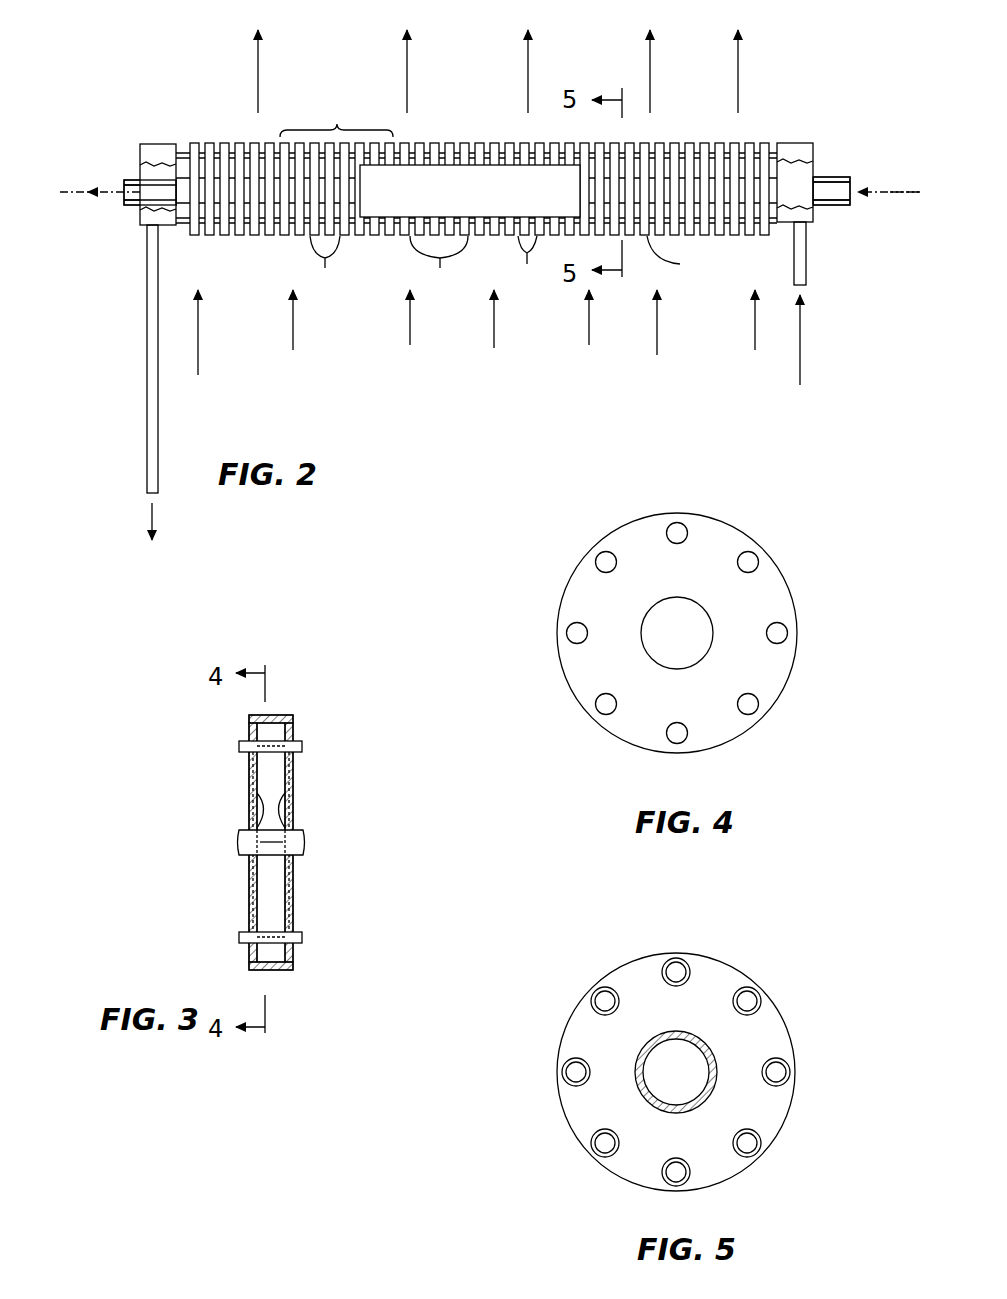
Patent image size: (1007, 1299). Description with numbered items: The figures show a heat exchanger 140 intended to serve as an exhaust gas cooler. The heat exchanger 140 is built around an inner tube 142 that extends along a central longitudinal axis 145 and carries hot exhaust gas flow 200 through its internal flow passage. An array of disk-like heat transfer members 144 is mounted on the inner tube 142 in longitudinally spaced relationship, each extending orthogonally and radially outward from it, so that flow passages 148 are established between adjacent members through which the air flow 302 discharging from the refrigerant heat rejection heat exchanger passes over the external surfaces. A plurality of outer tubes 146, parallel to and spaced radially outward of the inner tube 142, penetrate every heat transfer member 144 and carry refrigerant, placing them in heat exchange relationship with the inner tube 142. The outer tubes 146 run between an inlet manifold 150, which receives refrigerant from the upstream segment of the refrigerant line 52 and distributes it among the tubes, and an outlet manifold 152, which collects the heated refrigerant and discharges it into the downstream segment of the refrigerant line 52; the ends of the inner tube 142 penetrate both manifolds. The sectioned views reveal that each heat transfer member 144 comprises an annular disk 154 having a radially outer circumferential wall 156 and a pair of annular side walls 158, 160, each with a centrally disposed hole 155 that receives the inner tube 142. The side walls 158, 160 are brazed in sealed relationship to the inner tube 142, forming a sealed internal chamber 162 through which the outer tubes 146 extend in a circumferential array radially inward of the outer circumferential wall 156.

In FIG. 2, the refrigerant line 52 is at (147, 372).
In FIG. 2, the heat exchanger 140 is at (712, 138).
In FIG. 2, the inner tube 142 is at (133, 206).
In FIG. 3, the inner tube 142 is at (305, 836).
In FIG. 4, the inner tube 142 is at (683, 665).
In FIG. 5, the inner tube 142 is at (660, 1036).
In FIG. 2, the heat transfer members 144 is at (336, 116).
In FIG. 4, the heat transfer members 144 is at (720, 498).
In FIG. 5, the heat transfer members 144 is at (730, 938).
In FIG. 2, the central longitudinal axis 145 is at (65, 197).
In FIG. 2, the outer tubes 146 is at (190, 143).
In FIG. 3, the outer tubes 146 is at (297, 745).
In FIG. 4, the outer tubes 146 is at (607, 550).
In FIG. 5, the outer tubes 146 is at (676, 988).
In FIG. 2, the flow passages 148 is at (555, 265).
In FIG. 2, the inlet manifold 150 is at (813, 218).
In FIG. 2, the outlet manifold 152 is at (160, 228).
In FIG. 2, the annular disk 154 is at (430, 265).
In FIG. 3, the annular disk 154 is at (234, 711).
In FIG. 4, the annular disk 154 is at (763, 541).
In FIG. 5, the annular disk 154 is at (750, 966).
In FIG. 3, the centrally disposed hole 155 is at (256, 806).
In FIG. 4, the centrally disposed hole 155 is at (663, 667).
In FIG. 3, the radially outer circumferential wall 156 is at (270, 722).
In FIG. 4, the radially outer circumferential wall 156 is at (782, 576).
In FIG. 3, the annular side wall 158 is at (250, 897).
In FIG. 4, the annular side wall 158 is at (775, 662).
In FIG. 3, the annular side wall 160 is at (293, 902).
In FIG. 5, the annular side wall 160 is at (768, 1048).
In FIG. 3, the sealed internal chamber 162 is at (270, 778).
In FIG. 4, the sealed internal chamber 162 is at (578, 672).
In FIG. 2, the hot exhaust gas flow 200 is at (108, 190).
In FIG. 2, the air flow 302 is at (494, 328).